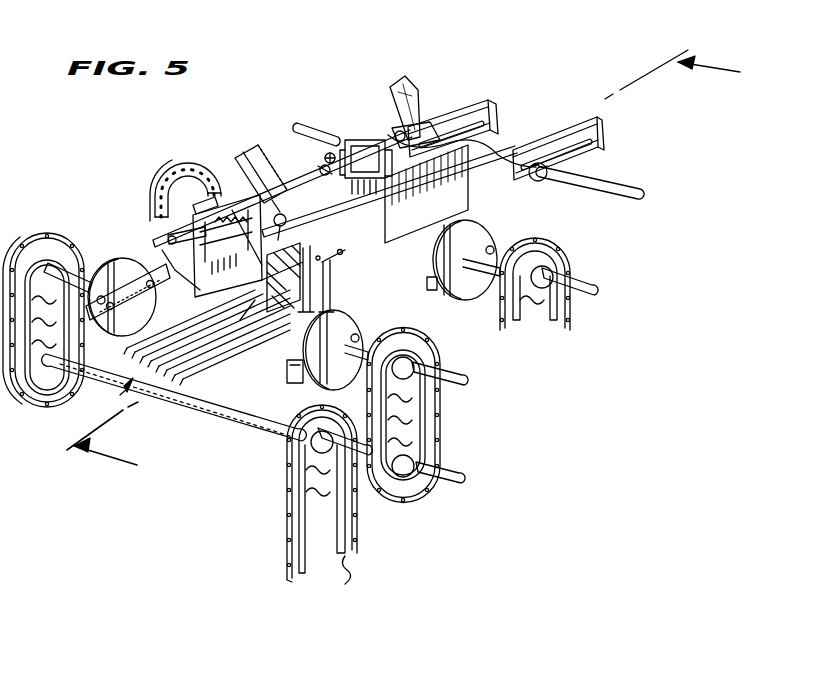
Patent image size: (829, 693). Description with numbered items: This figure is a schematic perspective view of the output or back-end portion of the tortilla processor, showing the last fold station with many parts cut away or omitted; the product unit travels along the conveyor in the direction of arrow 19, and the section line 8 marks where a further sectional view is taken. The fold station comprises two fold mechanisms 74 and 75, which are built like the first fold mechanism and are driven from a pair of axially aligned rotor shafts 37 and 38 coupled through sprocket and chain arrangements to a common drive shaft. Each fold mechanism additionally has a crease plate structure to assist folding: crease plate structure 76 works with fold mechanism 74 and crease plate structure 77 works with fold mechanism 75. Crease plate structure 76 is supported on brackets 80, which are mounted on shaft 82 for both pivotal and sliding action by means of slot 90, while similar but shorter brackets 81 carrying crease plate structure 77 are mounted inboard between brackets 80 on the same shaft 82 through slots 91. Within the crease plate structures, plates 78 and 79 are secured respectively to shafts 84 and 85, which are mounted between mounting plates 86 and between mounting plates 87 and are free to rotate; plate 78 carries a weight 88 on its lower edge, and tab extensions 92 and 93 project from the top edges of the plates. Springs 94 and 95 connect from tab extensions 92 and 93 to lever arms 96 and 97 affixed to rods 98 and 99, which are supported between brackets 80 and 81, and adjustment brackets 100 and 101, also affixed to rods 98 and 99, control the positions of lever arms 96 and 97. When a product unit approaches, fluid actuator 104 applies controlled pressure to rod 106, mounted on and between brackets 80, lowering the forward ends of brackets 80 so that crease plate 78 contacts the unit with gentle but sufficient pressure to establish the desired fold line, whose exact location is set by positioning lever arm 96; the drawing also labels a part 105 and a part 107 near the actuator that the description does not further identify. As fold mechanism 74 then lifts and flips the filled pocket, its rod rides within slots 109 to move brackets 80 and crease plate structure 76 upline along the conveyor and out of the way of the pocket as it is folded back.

The section line 8- 8 is at (403, 270).
The arrow 19 is at (116, 388).
The rotor shaft 37 is at (68, 244).
The rotor shaft 38 is at (460, 384).
The fold mechanism 74 is at (152, 235).
The fold mechanism 75 is at (310, 142).
The crease plate structure 76 is at (238, 330).
The crease plate structure 77 is at (305, 227).
The plate 78 is at (232, 320).
The plate 79 is at (395, 204).
The brackets 80 is at (485, 96).
The brackets 81 is at (564, 120).
The shaft 82 is at (640, 198).
The shaft 84 is at (168, 250).
The shaft 85 is at (315, 168).
The mounting plates 86 is at (175, 272).
The mounting plates 87 is at (326, 156).
The weight 88 is at (263, 344).
The slot 90 is at (604, 161).
The slots 91 is at (496, 134).
The tab extension 92 is at (188, 200).
The tab extension 93 is at (352, 138).
The spring 94 is at (194, 166).
The spring 95 is at (344, 144).
The lever arm 96 is at (246, 240).
The lever arm 97 is at (383, 144).
The rod 98 is at (287, 360).
The rod 99 is at (438, 118).
The adjustment bracket 100 is at (322, 262).
The adjustment bracket 101 is at (492, 192).
The fluid actuator 104 is at (244, 154).
The blade 105 is at (404, 78).
The rod 106 is at (284, 214).
The pivot 107 is at (420, 123).
The slots 109 is at (354, 297).